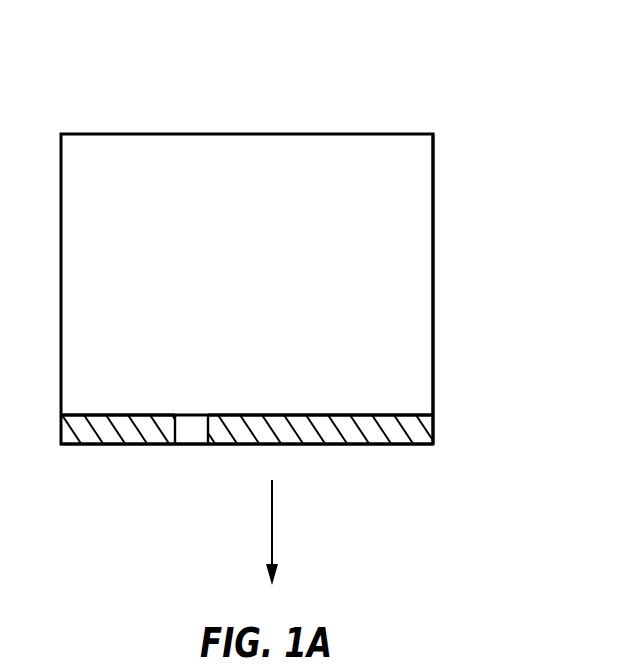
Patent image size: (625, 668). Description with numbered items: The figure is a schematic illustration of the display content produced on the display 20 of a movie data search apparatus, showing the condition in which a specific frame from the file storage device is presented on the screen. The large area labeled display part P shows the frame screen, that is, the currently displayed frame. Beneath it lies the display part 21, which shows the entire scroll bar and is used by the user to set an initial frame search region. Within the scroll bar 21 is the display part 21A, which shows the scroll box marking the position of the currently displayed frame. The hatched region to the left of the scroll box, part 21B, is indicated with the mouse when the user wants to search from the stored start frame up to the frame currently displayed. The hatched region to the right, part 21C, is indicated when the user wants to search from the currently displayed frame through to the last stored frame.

The display 20 is at (258, 133).
The display part P is at (433, 260).
The scroll bar 21 is at (333, 445).
The scroll box 21A is at (192, 445).
The part 21B is at (153, 415).
The part 21C is at (352, 415).